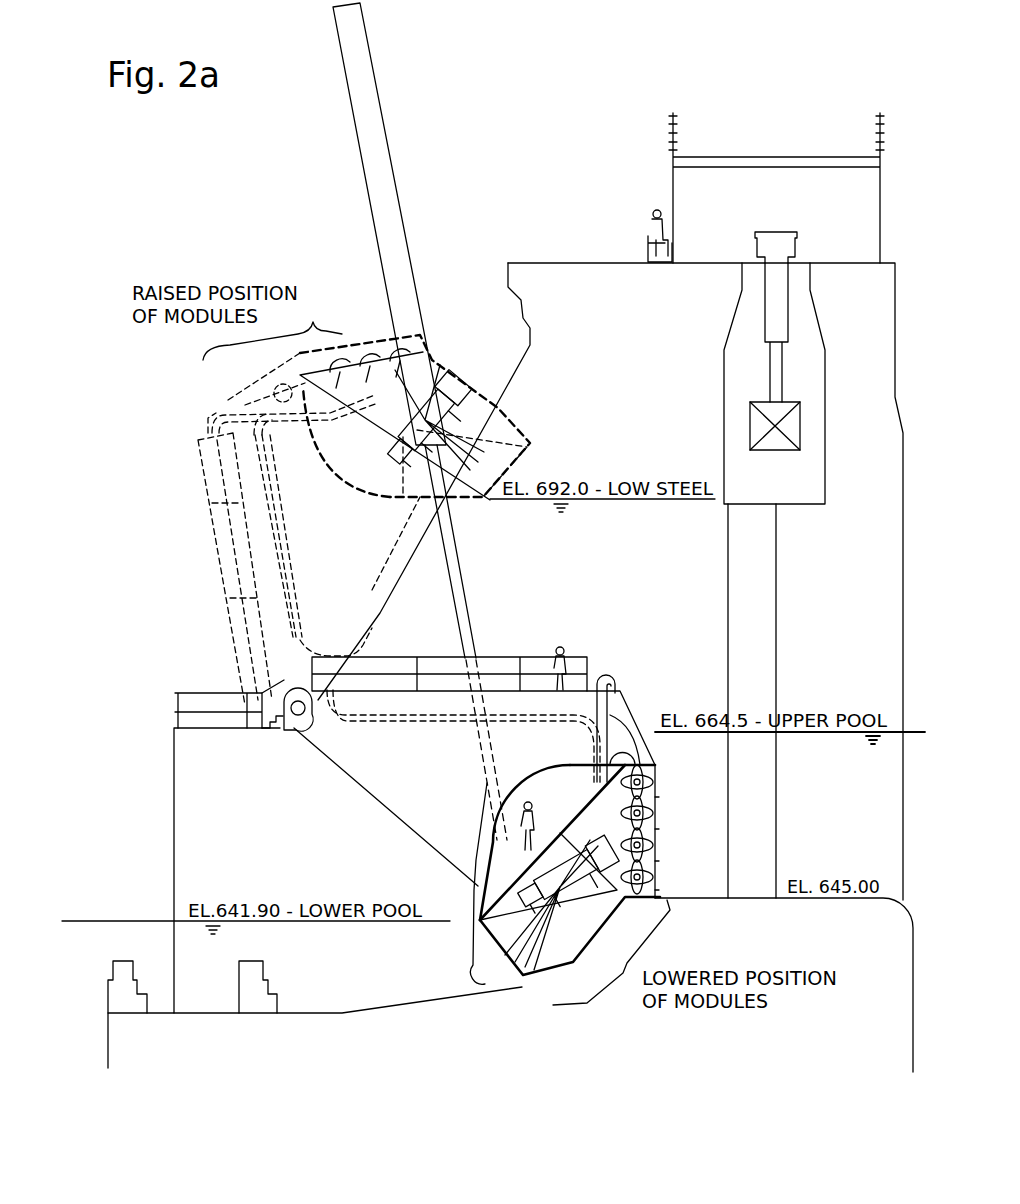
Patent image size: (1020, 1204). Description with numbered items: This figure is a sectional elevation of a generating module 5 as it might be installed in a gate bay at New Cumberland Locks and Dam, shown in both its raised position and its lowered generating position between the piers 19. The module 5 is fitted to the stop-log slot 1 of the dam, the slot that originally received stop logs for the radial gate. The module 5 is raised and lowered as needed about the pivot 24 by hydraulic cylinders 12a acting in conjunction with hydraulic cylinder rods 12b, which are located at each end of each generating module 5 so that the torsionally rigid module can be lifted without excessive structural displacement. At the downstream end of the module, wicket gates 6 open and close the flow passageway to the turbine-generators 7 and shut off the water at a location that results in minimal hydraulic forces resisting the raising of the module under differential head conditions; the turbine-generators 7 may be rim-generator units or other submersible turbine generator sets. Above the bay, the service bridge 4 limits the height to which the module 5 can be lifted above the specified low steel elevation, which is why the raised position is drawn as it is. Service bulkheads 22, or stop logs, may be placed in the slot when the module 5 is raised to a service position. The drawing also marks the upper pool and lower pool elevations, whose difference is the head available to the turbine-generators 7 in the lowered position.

The stop-log slot 1 is at (760, 632).
The service bridge 4 is at (779, 156).
The generating module 5 is at (457, 880).
The wicket gates 6 is at (659, 783).
The turbine-generators 7 is at (589, 842).
The hydraulic cylinders 12a is at (379, 92).
The hydraulic cylinder rods 12b is at (469, 598).
The piers 19 is at (634, 349).
The service bulkheads 22 is at (806, 424).
The pivot 24 is at (293, 731).